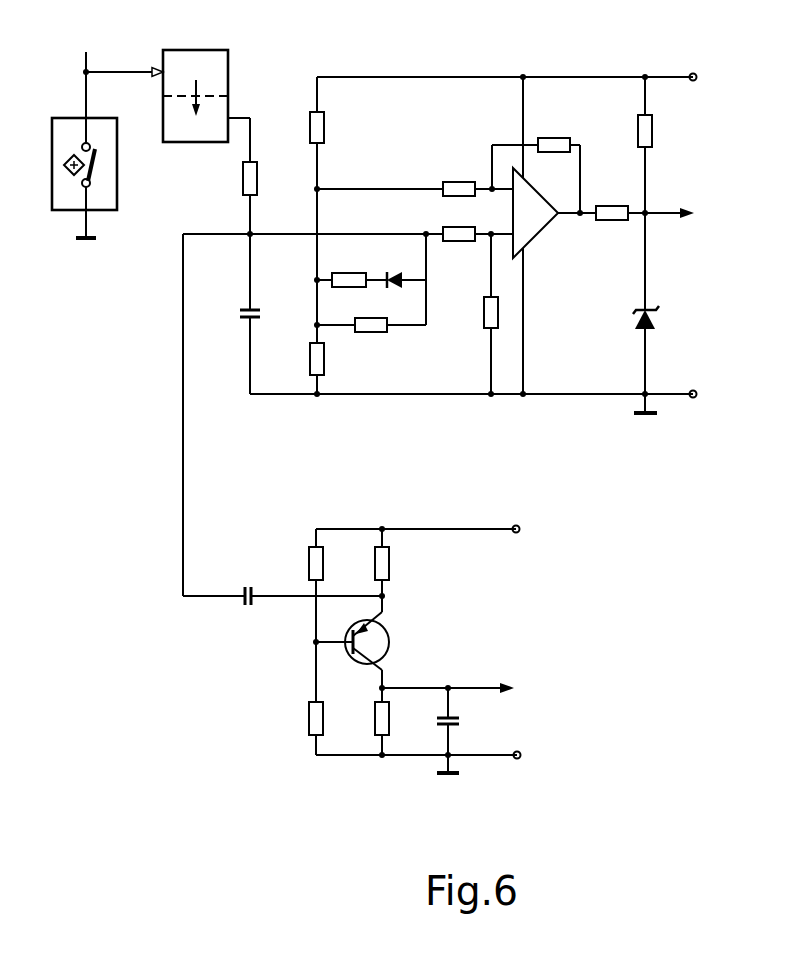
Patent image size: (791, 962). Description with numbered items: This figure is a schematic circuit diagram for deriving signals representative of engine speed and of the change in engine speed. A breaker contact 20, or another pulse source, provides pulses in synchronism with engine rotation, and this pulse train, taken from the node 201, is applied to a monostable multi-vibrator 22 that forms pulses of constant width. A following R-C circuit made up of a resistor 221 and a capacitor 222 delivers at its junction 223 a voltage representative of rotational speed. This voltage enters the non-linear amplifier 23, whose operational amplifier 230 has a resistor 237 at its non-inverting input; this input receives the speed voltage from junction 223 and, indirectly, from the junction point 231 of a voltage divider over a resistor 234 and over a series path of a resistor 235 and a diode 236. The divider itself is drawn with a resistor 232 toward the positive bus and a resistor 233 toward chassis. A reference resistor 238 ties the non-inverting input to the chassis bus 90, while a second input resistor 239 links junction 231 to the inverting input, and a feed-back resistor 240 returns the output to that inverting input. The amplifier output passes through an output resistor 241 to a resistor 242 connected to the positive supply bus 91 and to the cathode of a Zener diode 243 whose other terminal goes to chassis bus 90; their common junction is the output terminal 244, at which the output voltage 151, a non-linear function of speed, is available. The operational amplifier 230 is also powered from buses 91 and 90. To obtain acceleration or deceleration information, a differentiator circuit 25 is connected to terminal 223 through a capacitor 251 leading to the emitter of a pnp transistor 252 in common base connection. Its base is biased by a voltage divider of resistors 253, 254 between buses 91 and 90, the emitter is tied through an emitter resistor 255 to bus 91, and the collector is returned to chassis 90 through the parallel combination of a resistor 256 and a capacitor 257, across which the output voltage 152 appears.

The breaker contact 20 is at (117, 178).
The supply node 201 is at (92, 70).
The monostable multi-vibrator 22 is at (195, 50).
The resistor 221 is at (243, 180).
The capacitor 222 is at (246, 308).
The junction 223 is at (252, 232).
The non-linear amplifier 23 is at (537, 64).
The operational amplifier 230 is at (538, 227).
The junction point 231 is at (316, 278).
The resistor 232 is at (324, 128).
The resistor 233 is at (325, 365).
The resistor 234 is at (382, 333).
The resistor 235 is at (353, 271).
The diode 236 is at (398, 263).
The resistor 237 is at (461, 242).
The reference resistor 238 is at (486, 310).
The second input resistor 239 is at (455, 182).
The feed-back resistor 240 is at (556, 137).
The output resistor 241 is at (613, 220).
The resistor 242 is at (653, 130).
The Zener diode 243 is at (637, 320).
The output terminal 244 is at (643, 207).
The output voltage 151 is at (679, 208).
The positive supply bus 91 is at (412, 76).
The chassis bus 90 is at (437, 397).
The differentiator circuit 25 is at (310, 767).
The capacitor 251 is at (248, 608).
The pnp transistor 252 is at (390, 643).
The resistor 253 is at (308, 560).
The resistor 254 is at (309, 720).
The emitter resistor 255 is at (390, 566).
The resistor 256 is at (375, 725).
The capacitor 257 is at (460, 722).
The output voltage 152 is at (507, 689).